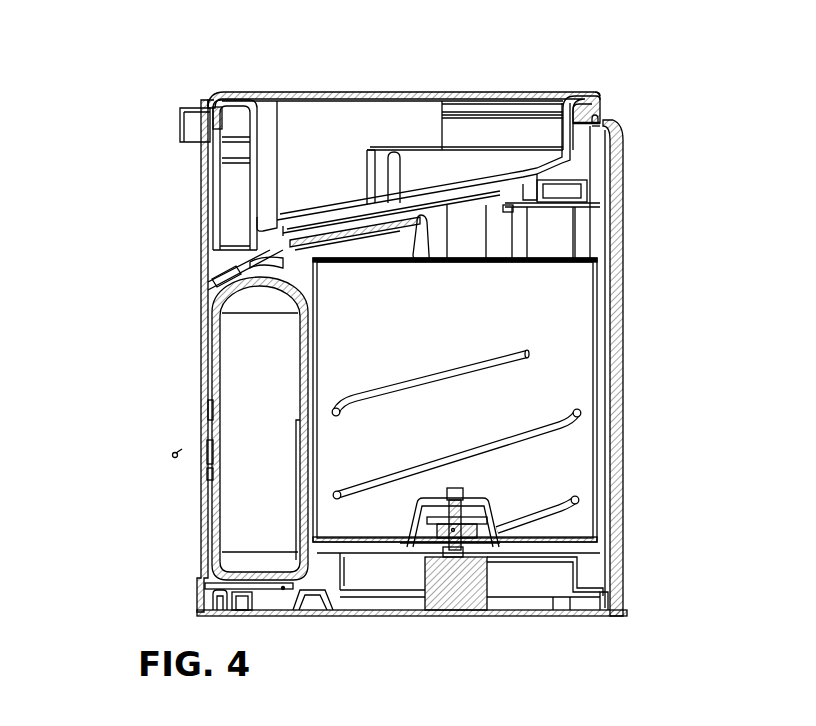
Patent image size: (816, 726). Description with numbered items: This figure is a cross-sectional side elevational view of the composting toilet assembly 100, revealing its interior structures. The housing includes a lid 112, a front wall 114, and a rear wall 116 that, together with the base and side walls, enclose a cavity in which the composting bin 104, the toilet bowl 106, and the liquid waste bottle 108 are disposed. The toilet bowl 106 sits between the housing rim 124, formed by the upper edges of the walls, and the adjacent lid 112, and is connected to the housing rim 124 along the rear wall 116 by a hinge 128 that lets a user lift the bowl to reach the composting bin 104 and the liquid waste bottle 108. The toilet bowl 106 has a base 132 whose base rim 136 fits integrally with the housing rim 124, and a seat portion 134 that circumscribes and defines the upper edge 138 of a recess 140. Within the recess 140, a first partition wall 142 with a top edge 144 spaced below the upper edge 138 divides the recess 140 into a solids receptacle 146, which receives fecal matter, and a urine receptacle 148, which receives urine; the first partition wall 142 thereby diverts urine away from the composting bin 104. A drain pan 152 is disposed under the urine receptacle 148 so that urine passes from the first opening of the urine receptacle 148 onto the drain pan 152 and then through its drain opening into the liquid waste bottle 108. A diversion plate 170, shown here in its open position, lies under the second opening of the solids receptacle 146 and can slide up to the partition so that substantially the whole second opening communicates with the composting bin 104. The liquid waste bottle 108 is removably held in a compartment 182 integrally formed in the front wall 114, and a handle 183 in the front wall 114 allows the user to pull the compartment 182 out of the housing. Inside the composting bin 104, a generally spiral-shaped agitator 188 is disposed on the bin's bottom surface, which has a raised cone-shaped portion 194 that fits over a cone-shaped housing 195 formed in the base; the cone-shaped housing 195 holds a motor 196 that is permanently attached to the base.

The composting toilet assembly 100 is at (682, 82).
The composting bin 104 is at (583, 300).
The toilet bowl 106 is at (226, 84).
The liquid waste bottle 108 is at (240, 343).
The lid 112 is at (600, 92).
The front wall 114 is at (205, 390).
The rear wall 116 is at (625, 458).
The housing rim 124 is at (200, 116).
The hinge 128 is at (603, 120).
The base 132 is at (310, 140).
The seat portion 134 is at (527, 110).
The base rim 136 is at (206, 100).
The upper edge 138 is at (475, 112).
The recess 140 is at (336, 124).
The first partition wall 142 is at (367, 178).
The top edge 144 is at (393, 155).
The solids receptacle 146 is at (527, 165).
The urine receptacle 148 is at (268, 183).
The drain pan 152 is at (215, 280).
The diversion plate 170 is at (367, 230).
The compartment 182 is at (200, 576).
The handle 183 is at (172, 456).
The agitator 188 is at (580, 415).
The cone-shaped portion 194 is at (495, 520).
The cone-shaped housing 195 is at (530, 562).
The motor 196 is at (455, 605).